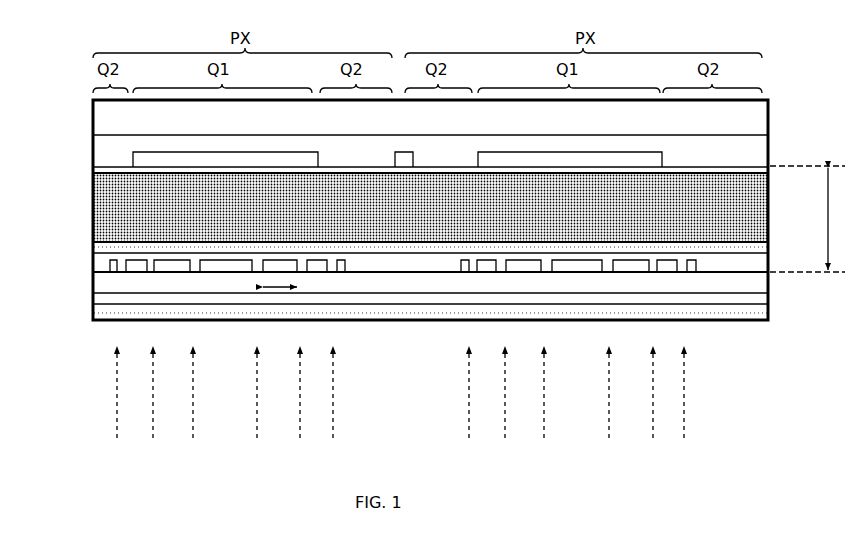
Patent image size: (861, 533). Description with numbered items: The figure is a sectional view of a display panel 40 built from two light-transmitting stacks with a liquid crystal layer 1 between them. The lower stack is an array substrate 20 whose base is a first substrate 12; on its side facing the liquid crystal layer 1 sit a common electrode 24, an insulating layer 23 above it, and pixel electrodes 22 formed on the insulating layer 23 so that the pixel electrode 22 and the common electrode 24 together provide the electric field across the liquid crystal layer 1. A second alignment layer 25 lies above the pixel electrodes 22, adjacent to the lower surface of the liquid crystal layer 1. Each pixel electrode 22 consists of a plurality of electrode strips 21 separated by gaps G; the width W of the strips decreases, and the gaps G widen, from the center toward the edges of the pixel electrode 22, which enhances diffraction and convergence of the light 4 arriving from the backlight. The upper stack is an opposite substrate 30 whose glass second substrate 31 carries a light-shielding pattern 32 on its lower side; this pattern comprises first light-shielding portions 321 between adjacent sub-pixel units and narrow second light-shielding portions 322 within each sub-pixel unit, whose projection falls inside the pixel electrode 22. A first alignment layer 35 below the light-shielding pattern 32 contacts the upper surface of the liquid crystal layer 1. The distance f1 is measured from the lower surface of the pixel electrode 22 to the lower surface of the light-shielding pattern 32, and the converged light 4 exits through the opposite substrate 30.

The display panel 40 is at (57, 65).
The opposite substrate 30 is at (425, 139).
The second substrate 31 is at (771, 122).
The light-shielding pattern 32 is at (430, 137).
The first light-shielding portion 321 is at (395, 153).
The second light-shielding portion 322 is at (264, 151).
The first alignment layer 35 is at (757, 171).
The liquid crystal layer 1 is at (737, 210).
The electrode strips 21 is at (167, 262).
The second alignment layer 25 is at (760, 247).
The array substrate 20 is at (417, 260).
The pixel electrode 22 is at (125, 253).
The insulating layer 23 is at (112, 289).
The common electrode 24 is at (110, 305).
The first substrate 12 is at (435, 324).
The light 4 is at (690, 398).
The gap G is at (127, 257).
The width W is at (263, 287).
The distance f1 is at (833, 247).